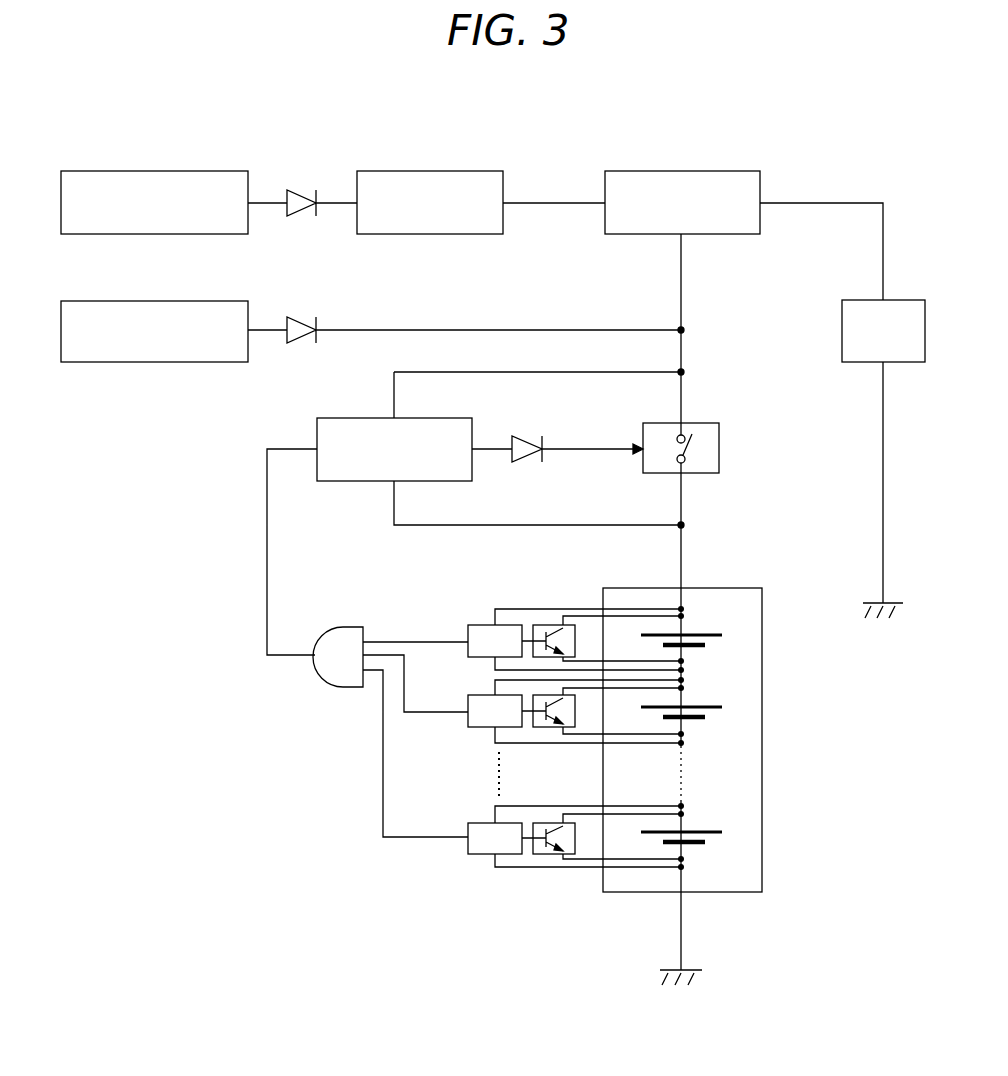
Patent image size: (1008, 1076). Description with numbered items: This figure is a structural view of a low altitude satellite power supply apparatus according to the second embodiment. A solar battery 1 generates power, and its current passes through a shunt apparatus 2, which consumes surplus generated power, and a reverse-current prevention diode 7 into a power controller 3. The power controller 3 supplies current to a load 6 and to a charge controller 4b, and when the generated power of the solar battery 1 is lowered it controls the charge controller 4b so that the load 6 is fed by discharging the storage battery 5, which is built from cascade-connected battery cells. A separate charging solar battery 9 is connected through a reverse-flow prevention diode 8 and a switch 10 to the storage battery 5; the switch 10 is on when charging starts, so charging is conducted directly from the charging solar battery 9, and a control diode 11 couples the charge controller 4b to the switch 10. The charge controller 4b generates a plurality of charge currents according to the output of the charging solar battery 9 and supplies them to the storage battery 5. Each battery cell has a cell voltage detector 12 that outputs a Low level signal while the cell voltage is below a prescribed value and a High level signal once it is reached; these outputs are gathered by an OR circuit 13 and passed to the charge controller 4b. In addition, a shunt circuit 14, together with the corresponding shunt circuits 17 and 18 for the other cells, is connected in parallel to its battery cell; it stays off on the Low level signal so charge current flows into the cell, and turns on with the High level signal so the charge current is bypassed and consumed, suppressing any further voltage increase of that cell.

The solar battery 1 is at (153, 170).
The shunt apparatus 2 is at (430, 170).
The power controller 3 is at (681, 170).
The charge controller 4b is at (360, 418).
The storage battery 5 is at (707, 588).
The load 6 is at (842, 332).
The reverse-current prevention diode 7 is at (306, 190).
The reverse-flow prevention diode 8 is at (306, 318).
The charging solar battery 9 is at (153, 300).
The switch 10 is at (719, 448).
The control diode 11 is at (530, 436).
The cell voltage detector 12 is at (483, 625).
The OR circuit 13 is at (332, 628).
The shunt circuit 14 is at (545, 625).
The shunt circuit 17 is at (545, 727).
The shunt circuit 18 is at (545, 854).